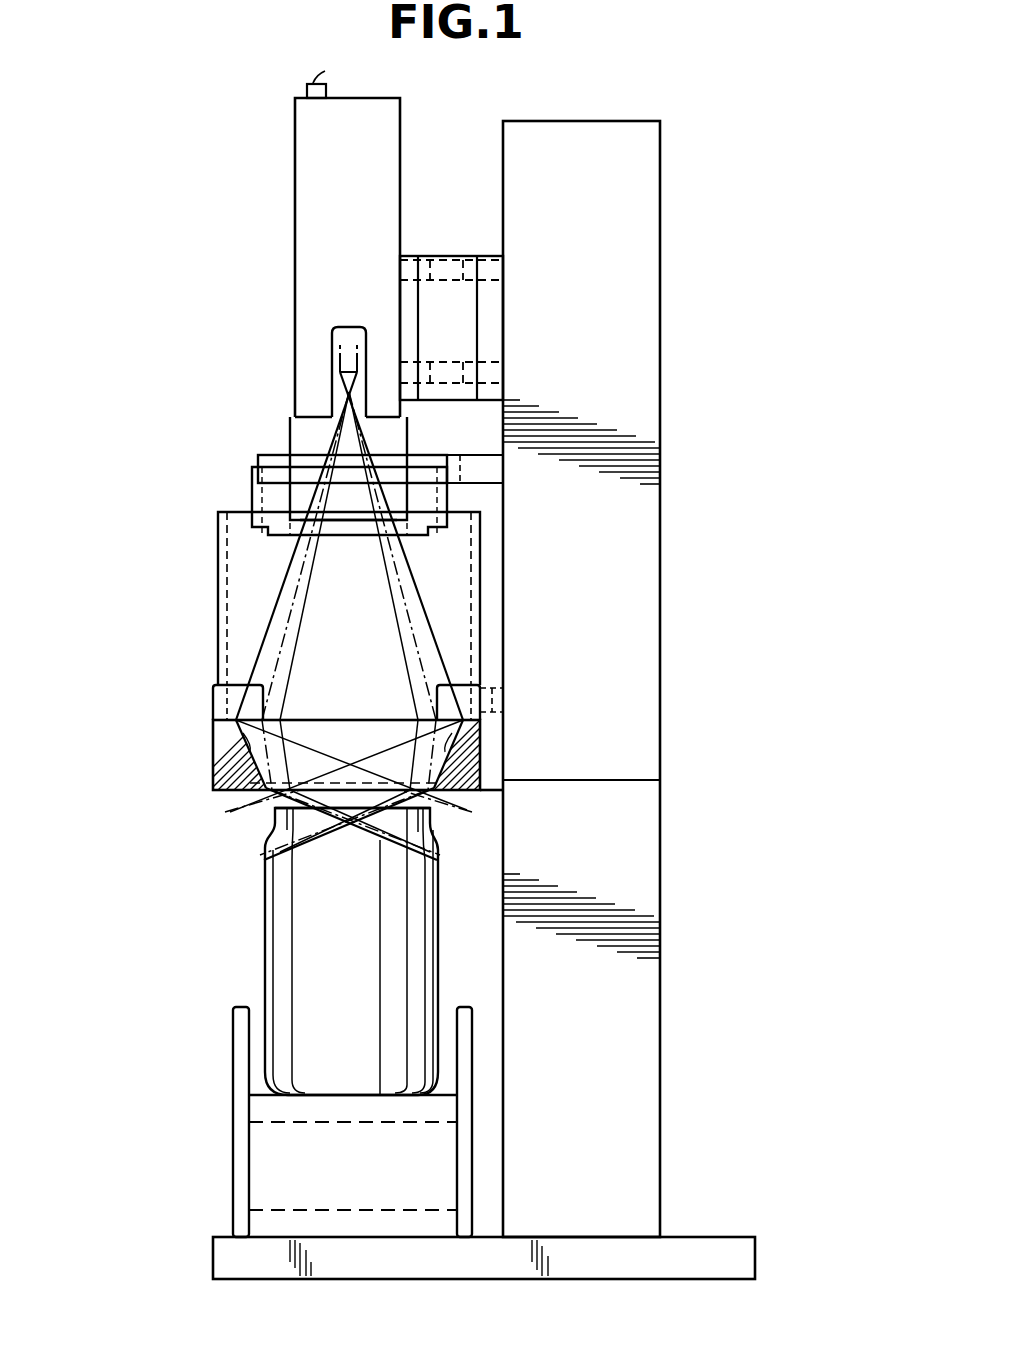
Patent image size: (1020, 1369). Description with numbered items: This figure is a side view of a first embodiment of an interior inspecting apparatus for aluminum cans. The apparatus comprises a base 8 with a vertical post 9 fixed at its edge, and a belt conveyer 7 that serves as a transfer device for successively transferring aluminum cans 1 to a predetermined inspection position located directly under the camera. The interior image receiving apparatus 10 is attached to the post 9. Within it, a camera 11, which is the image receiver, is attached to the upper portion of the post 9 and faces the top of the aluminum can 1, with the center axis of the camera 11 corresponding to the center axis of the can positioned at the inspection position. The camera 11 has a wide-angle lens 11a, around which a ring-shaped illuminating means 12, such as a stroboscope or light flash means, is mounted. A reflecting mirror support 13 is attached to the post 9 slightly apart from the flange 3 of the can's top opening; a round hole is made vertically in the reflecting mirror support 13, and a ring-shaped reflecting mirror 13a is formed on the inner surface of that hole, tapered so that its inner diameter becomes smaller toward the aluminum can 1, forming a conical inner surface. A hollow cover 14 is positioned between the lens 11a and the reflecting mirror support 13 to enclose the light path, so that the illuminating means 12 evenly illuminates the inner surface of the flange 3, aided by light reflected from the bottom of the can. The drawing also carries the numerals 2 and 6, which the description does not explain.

The aluminum can 1 is at (232, 978).
The guide posts 2 is at (266, 1057).
The flange 3 is at (268, 818).
The cable 6 is at (325, 71).
The belt conveyer 7 is at (235, 1153).
The base 8 is at (713, 1237).
The vertical post 9 is at (660, 1000).
The interior image receiving apparatus 10 is at (252, 173).
The camera 11 is at (295, 319).
The wide-angle lens 11a is at (345, 522).
The ring-shaped illuminating means 12 is at (252, 496).
The reflecting mirror support 13 is at (213, 750).
The ring-shaped reflecting mirror 13a is at (232, 765).
The hollow cover 14 is at (218, 597).